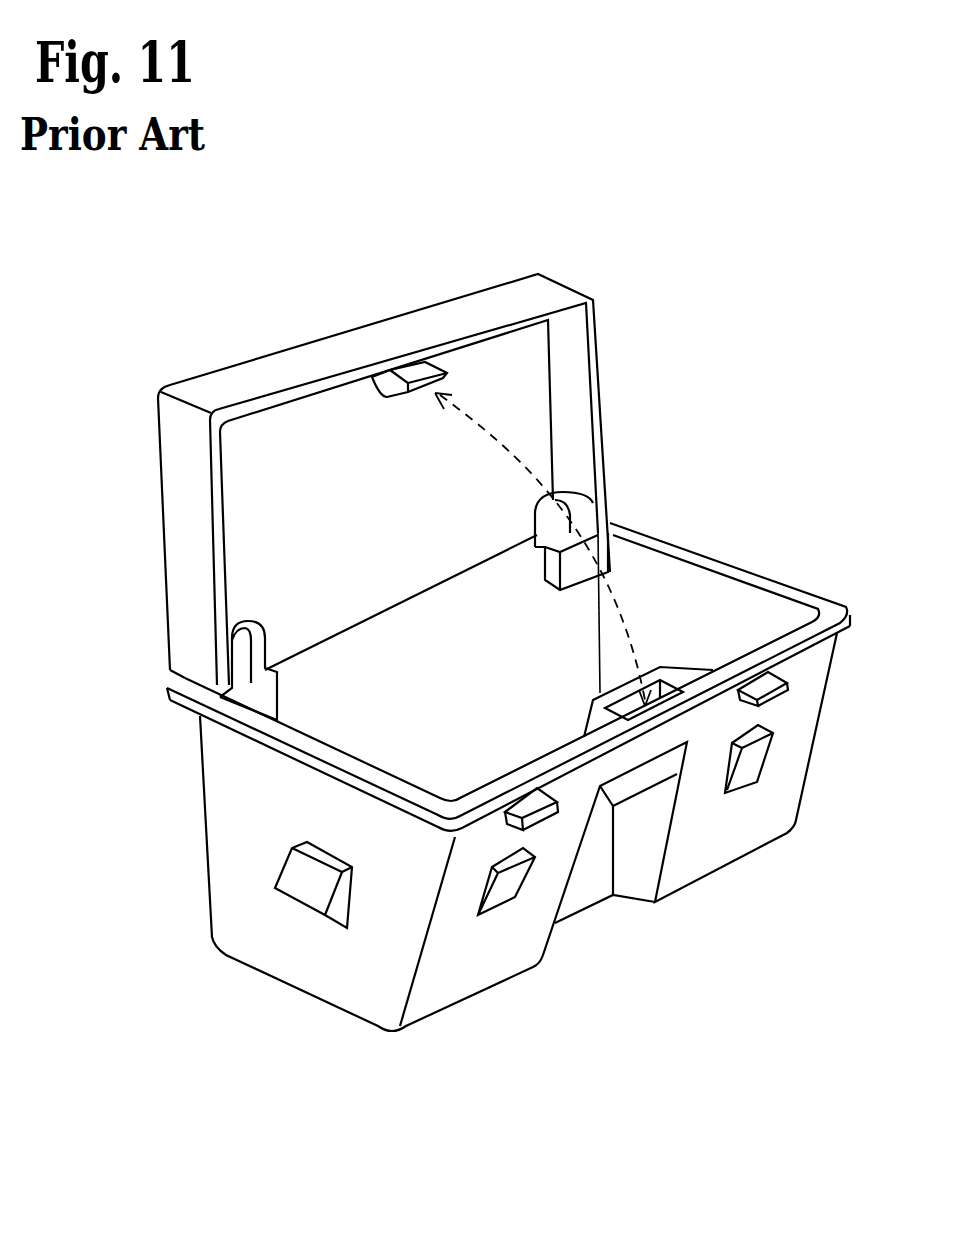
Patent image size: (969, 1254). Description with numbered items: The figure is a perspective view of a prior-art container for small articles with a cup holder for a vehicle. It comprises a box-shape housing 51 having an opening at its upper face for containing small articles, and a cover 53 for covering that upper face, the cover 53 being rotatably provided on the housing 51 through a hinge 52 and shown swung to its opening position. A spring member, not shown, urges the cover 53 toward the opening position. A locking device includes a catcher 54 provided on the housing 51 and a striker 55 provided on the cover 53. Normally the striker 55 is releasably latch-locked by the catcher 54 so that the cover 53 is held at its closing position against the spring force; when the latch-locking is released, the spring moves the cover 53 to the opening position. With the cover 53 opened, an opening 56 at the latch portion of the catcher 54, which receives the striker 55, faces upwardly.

The housing 51 is at (508, 804).
The hinge 52 is at (252, 648).
The cover 53 is at (441, 450).
The catcher 54 is at (643, 778).
The striker 55 is at (413, 376).
The opening 56 is at (628, 706).